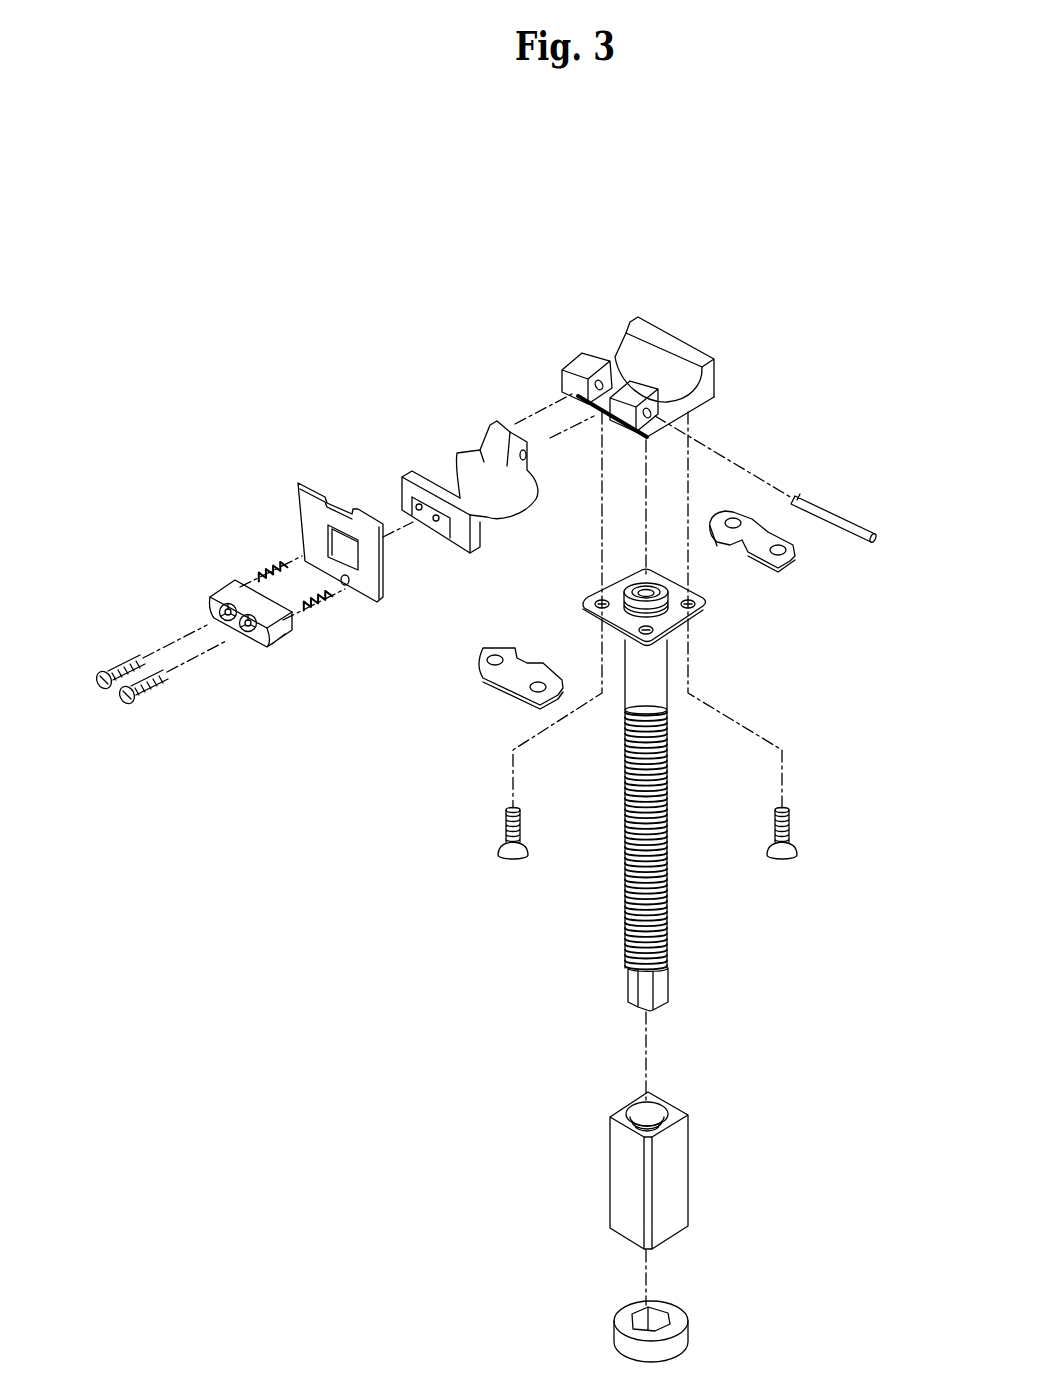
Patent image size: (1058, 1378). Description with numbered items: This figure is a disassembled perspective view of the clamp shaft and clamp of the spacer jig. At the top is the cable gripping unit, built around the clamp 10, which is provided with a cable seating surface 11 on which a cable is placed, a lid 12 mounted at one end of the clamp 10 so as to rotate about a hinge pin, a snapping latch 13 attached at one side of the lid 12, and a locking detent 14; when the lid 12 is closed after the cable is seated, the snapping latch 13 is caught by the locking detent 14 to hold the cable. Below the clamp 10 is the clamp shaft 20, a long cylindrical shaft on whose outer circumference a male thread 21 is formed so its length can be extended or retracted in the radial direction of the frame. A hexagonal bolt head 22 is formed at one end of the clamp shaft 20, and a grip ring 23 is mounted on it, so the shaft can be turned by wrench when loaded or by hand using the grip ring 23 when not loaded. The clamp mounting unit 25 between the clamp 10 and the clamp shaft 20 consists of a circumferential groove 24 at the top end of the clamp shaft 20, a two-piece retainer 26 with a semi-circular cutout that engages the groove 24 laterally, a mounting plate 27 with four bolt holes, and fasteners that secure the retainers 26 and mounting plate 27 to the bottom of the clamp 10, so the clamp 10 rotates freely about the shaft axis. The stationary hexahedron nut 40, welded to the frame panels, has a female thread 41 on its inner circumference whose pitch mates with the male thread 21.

The clamp 10 is at (696, 381).
The cable seating surface 11 is at (633, 363).
The lid 12 is at (464, 482).
The snapping latch 13 is at (317, 522).
The locking detent 14 is at (687, 335).
The clamp shaft 20 is at (635, 752).
The male thread 21 is at (670, 910).
The hexagonal bolt head 22 is at (640, 997).
The grip ring 23 is at (680, 1322).
The circumferential groove 24 is at (712, 607).
The clamp mounting unit 25 is at (732, 628).
The retainer 26 is at (487, 677).
The mounting plate 27 is at (583, 603).
The stationary hexahedron nut 40 is at (714, 1158).
The female thread 41 is at (672, 1108).